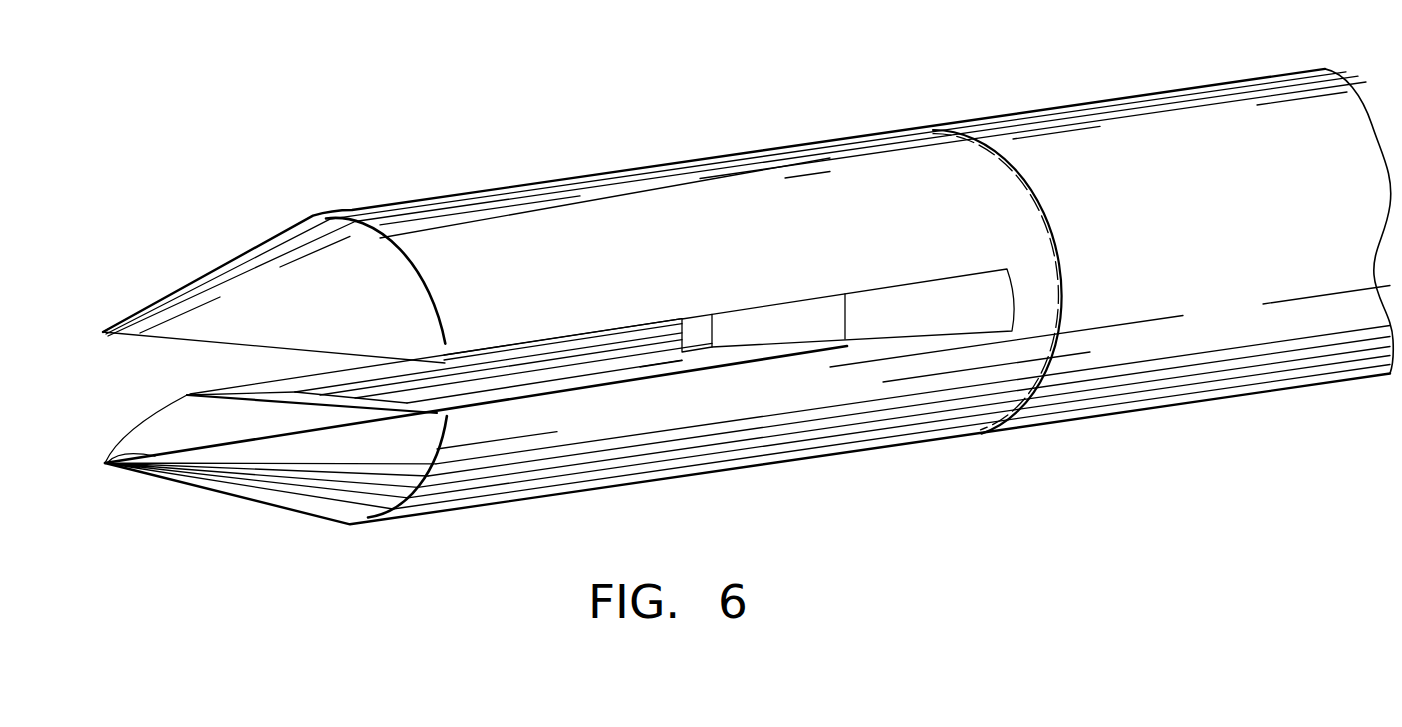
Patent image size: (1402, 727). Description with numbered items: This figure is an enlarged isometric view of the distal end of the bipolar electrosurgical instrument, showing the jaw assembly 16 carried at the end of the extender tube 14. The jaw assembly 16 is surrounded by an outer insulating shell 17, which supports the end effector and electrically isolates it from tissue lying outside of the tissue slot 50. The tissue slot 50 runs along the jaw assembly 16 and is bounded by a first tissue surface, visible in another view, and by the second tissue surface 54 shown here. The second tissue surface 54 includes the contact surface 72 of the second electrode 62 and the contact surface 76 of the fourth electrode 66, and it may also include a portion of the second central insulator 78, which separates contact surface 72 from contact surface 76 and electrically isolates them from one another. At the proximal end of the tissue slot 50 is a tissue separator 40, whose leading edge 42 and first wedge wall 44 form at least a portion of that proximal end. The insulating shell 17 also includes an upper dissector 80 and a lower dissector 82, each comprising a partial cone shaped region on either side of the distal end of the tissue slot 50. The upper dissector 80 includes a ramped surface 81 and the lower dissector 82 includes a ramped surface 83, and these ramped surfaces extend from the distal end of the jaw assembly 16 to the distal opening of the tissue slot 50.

The extender tube 14 is at (1170, 128).
The jaw assembly 16 is at (750, 193).
The outer insulating shell 17 is at (473, 243).
The tissue separator 40 is at (832, 357).
The leading edge 42 is at (672, 320).
The first wedge wall 44 is at (702, 308).
The tissue slot 50 is at (222, 366).
The second tissue surface 54 is at (350, 405).
The second electrode 62 is at (653, 365).
The fourth electrode 66 is at (541, 360).
The contact surface 72 is at (587, 372).
The contact surface 76 is at (390, 380).
The second central insulator 78 is at (453, 383).
The upper dissector 80 is at (257, 282).
The ramped surface 81 is at (133, 333).
The lower dissector 82 is at (233, 483).
The ramped surface 83 is at (103, 470).